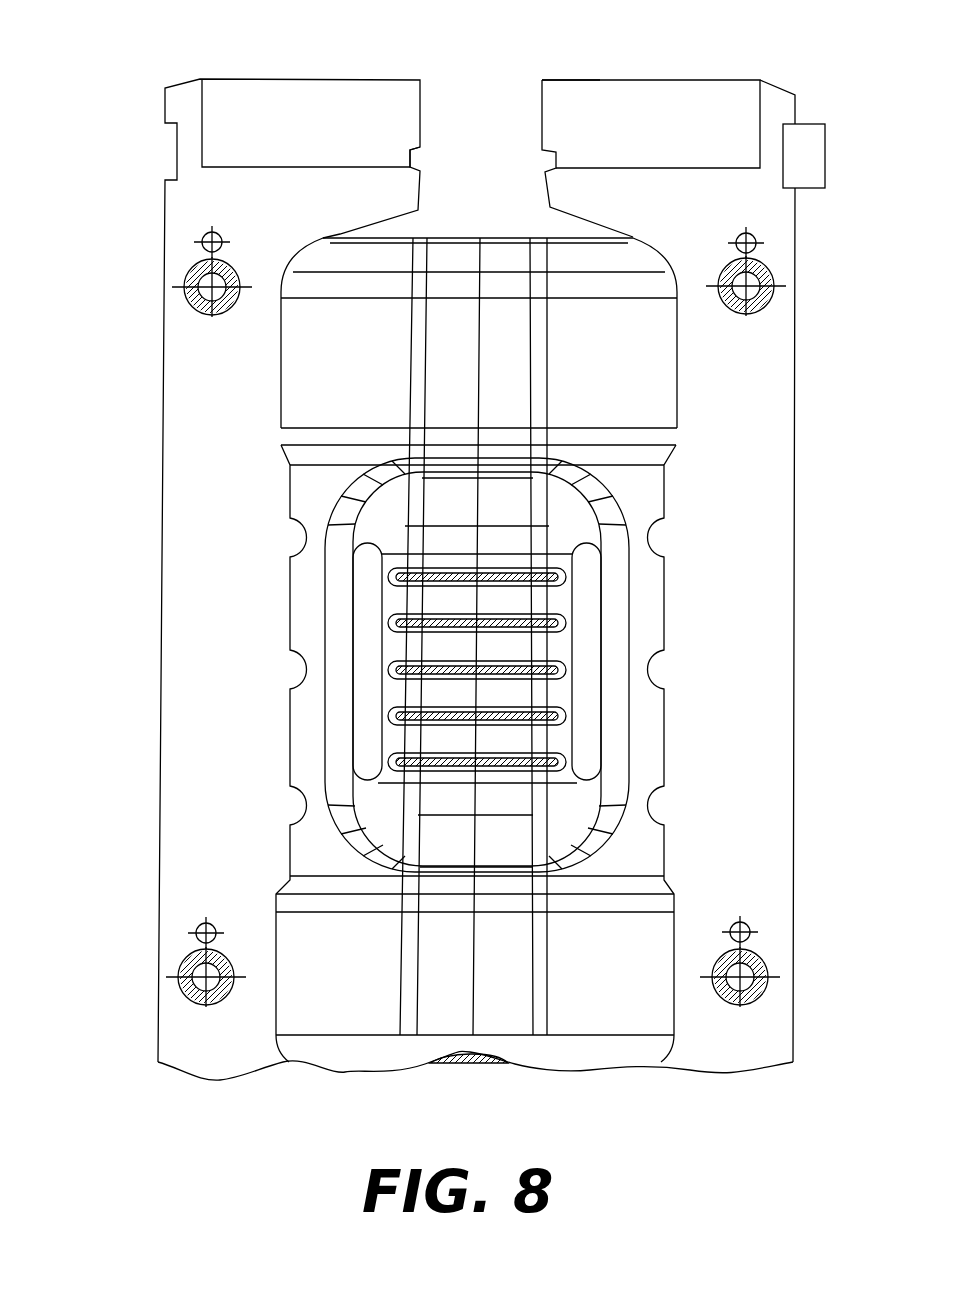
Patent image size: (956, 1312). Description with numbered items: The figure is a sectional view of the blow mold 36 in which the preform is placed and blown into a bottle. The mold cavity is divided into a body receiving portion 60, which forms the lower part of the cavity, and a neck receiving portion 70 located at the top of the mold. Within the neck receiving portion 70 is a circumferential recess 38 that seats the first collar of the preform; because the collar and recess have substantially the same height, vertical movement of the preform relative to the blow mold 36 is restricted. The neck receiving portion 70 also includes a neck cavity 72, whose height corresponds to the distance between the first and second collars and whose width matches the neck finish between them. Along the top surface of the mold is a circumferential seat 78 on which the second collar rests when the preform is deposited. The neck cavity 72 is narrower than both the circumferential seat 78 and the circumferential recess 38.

The blow mold 36 is at (163, 652).
The circumferential recess 38 is at (402, 156).
The body receiving portion 60 is at (270, 346).
The neck receiving portion 70 is at (372, 149).
The neck cavity 72 is at (542, 133).
The circumferential seat 78 is at (545, 82).